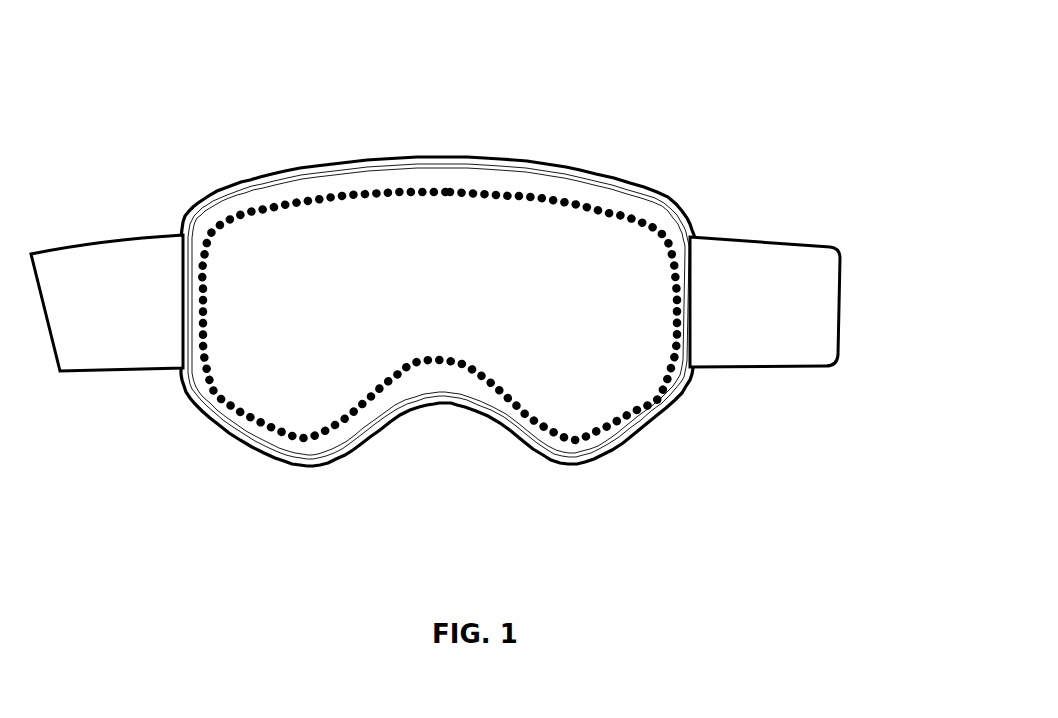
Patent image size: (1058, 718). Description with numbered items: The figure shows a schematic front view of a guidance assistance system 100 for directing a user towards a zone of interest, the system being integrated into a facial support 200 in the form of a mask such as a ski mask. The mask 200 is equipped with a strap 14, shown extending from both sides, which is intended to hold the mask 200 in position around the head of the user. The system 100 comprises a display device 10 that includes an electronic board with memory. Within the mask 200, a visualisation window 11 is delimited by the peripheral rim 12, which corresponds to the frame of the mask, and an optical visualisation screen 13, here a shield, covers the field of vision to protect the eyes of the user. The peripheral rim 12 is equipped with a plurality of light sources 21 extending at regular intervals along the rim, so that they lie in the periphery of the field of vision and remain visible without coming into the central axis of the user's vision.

The facial support 200 is at (488, 275).
The guidance assistance system 100 is at (447, 284).
The display device 10 is at (433, 405).
The visualisation window 11 is at (440, 293).
The peripheral rim 12 is at (259, 195).
The optical visualisation screen 13 is at (262, 368).
The strap 14 is at (820, 308).
The light sources 21 is at (385, 181).